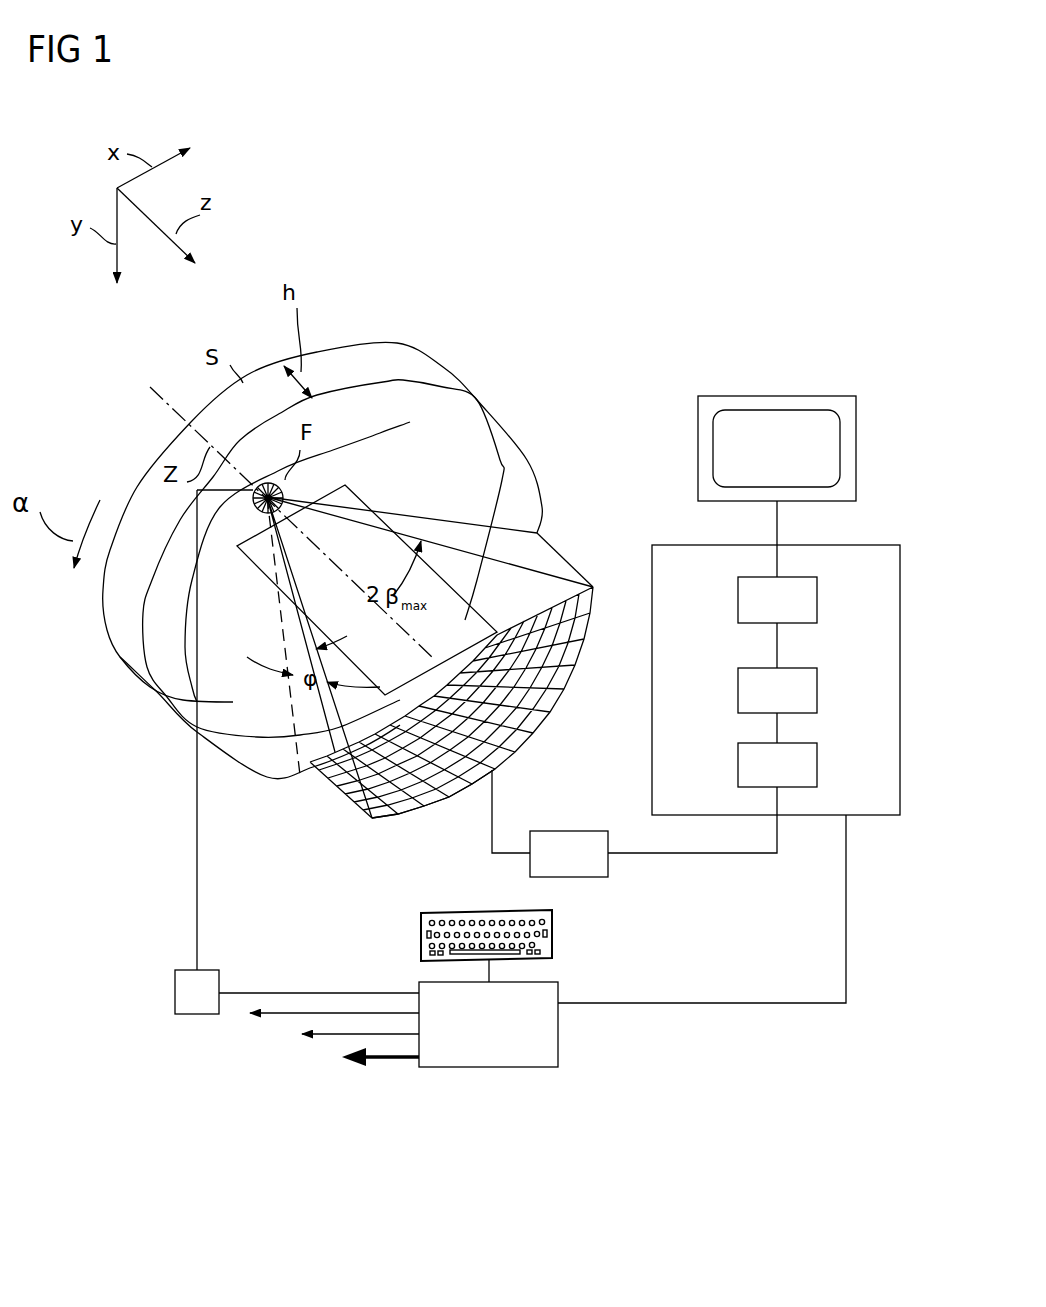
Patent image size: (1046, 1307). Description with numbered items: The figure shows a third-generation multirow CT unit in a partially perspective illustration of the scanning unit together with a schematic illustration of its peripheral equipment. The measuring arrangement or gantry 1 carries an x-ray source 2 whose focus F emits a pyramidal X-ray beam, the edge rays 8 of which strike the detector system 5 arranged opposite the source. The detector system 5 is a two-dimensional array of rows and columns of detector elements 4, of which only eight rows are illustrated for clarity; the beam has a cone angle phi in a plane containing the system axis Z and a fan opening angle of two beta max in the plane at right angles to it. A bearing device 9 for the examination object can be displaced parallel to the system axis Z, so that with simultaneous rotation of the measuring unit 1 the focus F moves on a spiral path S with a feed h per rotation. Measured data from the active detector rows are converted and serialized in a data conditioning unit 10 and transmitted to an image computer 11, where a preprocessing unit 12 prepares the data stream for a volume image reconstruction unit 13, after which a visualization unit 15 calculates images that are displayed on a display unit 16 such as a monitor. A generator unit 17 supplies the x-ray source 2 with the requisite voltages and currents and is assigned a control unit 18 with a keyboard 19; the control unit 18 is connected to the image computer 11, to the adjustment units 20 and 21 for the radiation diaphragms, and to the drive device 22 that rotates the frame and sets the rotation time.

The measuring arrangement 1 is at (166, 798).
The x-ray source 2 is at (253, 501).
The detector elements 4 is at (520, 717).
The detector system 5 is at (430, 800).
The edge rays 8 is at (298, 706).
The bearing device 9 is at (262, 573).
The data conditioning unit 10 is at (555, 838).
The image computer 11 is at (668, 545).
The preprocessing unit 12 is at (818, 760).
The volume image reconstruction unit 13 is at (818, 698).
The visualization unit 15 is at (818, 605).
The display unit 16 is at (708, 417).
The generator unit 17 is at (195, 1008).
The control unit 18 is at (551, 1057).
The keyboard 19 is at (425, 947).
The adjustment unit 20 is at (285, 1015).
The adjustment unit 21 is at (333, 1036).
The drive device 22 is at (380, 1060).